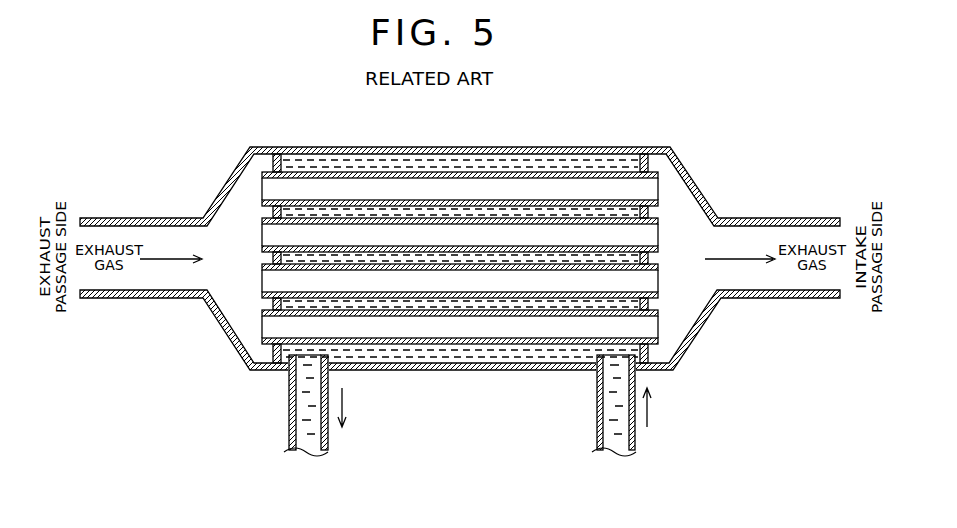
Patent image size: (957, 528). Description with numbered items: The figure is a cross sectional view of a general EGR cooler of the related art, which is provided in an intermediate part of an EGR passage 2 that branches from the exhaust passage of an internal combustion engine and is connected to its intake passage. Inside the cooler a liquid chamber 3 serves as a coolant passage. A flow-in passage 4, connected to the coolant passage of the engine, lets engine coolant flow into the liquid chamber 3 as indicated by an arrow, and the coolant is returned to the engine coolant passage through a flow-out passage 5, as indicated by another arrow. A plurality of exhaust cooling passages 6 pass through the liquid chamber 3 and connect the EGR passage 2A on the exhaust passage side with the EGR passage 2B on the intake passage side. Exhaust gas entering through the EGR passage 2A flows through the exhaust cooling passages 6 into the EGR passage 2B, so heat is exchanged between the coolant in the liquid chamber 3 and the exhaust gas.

The EGR passage 2 is at (460, 309).
The EGR passage on the exhaust passage side 2A is at (169, 298).
The EGR passage on the intake passage side 2B is at (722, 298).
The liquid chamber 3 is at (508, 161).
The flow-in passage 4 is at (603, 405).
The flow-out passage 5 is at (297, 406).
The exhaust cooling passages 6 is at (355, 220).